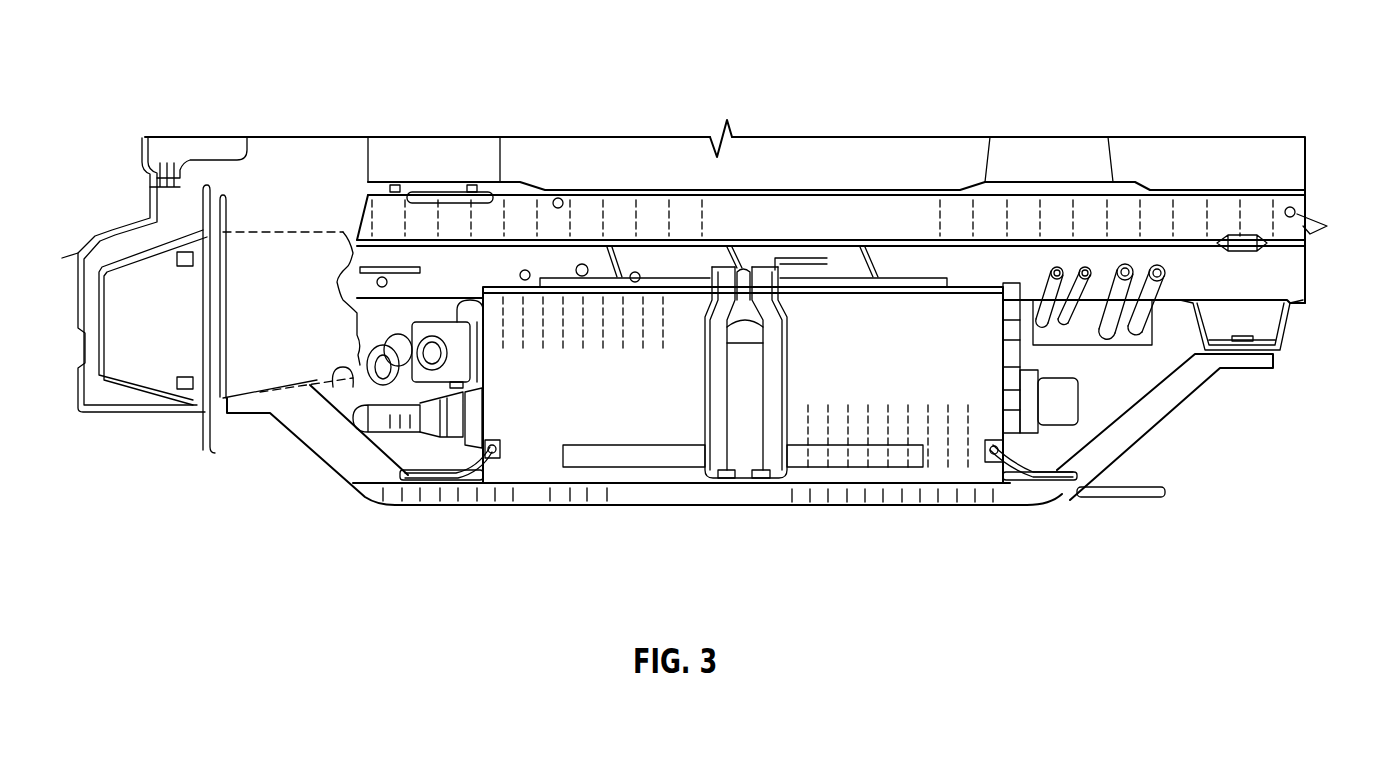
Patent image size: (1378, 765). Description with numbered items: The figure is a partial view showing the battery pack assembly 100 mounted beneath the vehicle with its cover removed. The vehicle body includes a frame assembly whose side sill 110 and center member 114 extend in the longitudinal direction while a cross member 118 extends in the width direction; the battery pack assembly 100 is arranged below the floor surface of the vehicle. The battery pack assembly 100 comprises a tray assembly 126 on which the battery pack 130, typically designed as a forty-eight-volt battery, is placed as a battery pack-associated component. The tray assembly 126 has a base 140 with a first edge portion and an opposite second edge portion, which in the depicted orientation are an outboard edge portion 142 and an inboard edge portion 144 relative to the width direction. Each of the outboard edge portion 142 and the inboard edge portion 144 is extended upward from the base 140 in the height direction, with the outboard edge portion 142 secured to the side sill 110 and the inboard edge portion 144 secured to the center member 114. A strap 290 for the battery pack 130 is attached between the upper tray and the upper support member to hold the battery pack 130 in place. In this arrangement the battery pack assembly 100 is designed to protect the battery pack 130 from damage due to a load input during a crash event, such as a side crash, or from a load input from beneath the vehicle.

The battery pack assembly 100 is at (398, 527).
The side sill 110 is at (163, 413).
The center member 114 is at (1287, 337).
The cross member 118 is at (952, 260).
The tray assembly 126 is at (983, 507).
The battery pack 130 is at (542, 470).
The base 140 is at (840, 507).
The outboard edge portion 142 is at (320, 447).
The inboard edge portion 144 is at (1153, 417).
The strap 290 is at (788, 400).